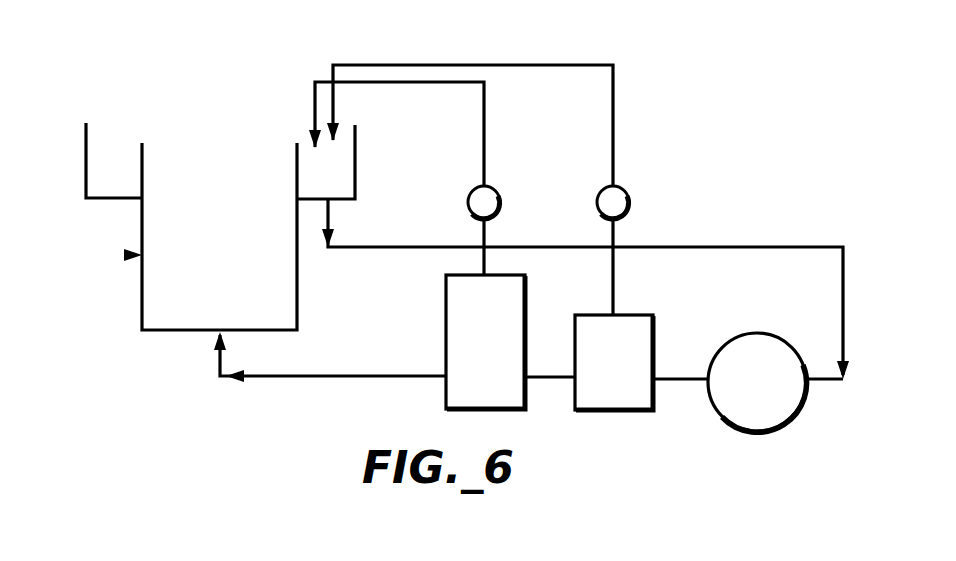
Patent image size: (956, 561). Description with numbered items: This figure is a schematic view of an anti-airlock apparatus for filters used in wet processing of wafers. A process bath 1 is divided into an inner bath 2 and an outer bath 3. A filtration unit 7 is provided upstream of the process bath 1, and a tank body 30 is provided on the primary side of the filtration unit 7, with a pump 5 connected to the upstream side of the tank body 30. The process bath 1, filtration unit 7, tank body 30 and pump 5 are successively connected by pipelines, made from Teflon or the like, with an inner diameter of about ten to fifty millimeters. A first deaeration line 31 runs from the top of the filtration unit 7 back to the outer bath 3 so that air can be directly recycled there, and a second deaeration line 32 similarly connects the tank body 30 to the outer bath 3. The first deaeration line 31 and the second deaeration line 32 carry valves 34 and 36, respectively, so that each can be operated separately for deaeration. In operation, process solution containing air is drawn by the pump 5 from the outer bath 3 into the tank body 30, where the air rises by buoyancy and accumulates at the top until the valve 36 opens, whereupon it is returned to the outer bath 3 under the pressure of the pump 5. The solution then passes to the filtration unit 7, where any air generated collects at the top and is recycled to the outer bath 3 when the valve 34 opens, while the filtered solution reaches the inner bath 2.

The process bath 1 is at (128, 255).
The inner bath 2 is at (297, 305).
The outer bath 3 is at (86, 168).
The pump 5 is at (757, 333).
The filtration unit 7 is at (525, 309).
The tank body 30 is at (653, 334).
The first deaeration line 31 is at (484, 141).
The second deaeration line 32 is at (613, 143).
The valve 34 is at (501, 202).
The valve 36 is at (630, 202).